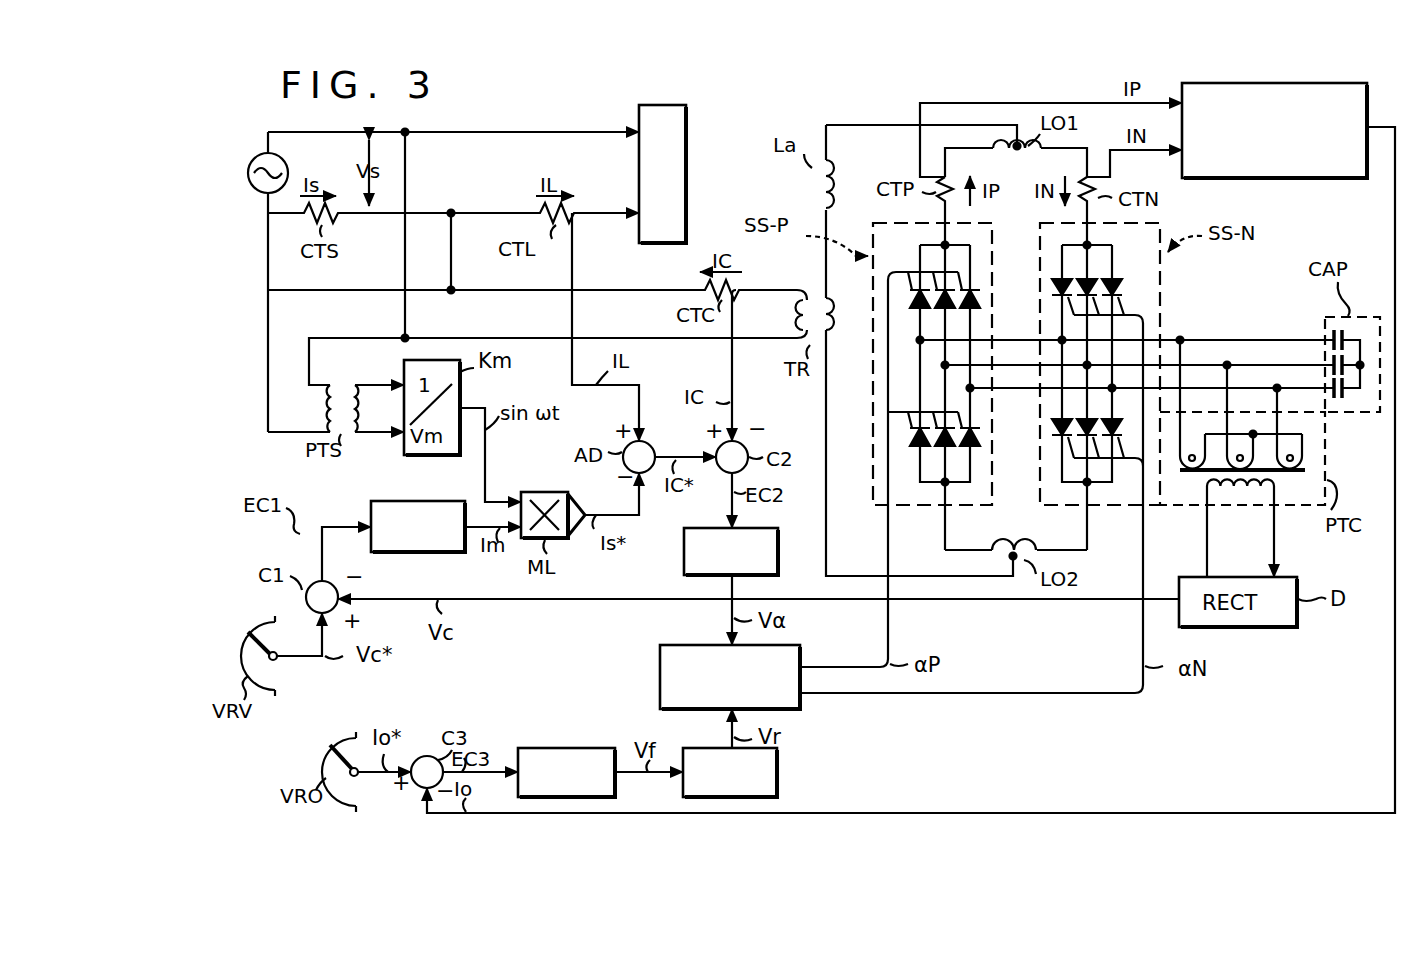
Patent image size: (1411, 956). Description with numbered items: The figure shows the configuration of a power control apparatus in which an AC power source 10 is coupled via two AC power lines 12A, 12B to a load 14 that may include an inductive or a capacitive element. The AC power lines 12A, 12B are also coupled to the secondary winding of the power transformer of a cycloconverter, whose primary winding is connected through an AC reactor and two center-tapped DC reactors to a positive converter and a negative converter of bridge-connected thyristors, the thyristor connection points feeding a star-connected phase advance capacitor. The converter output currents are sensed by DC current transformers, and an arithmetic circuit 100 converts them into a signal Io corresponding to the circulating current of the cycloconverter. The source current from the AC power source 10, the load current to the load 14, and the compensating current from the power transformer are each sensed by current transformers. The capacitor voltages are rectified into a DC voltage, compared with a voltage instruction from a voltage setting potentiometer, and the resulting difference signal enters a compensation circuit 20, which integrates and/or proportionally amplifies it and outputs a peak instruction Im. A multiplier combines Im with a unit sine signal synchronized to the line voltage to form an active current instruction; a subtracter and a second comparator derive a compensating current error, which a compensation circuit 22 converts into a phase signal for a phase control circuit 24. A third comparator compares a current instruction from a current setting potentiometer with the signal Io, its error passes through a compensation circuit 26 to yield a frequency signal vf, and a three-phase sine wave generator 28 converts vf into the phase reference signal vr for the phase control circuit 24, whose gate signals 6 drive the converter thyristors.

The AC power source 10 is at (256, 192).
The AC power line 12A is at (443, 213).
The AC power line 12B is at (515, 132).
The load 14 is at (686, 112).
The compensation circuit 20 is at (364, 502).
The compensation circuit 22 is at (684, 566).
The phase control circuit 24 is at (660, 678).
The compensation circuit 26 is at (562, 748).
The 3-phase sine wave generator 28 is at (778, 774).
The arithmetic circuit 100 is at (1300, 178).
The gate signal lines 6 is at (897, 627).